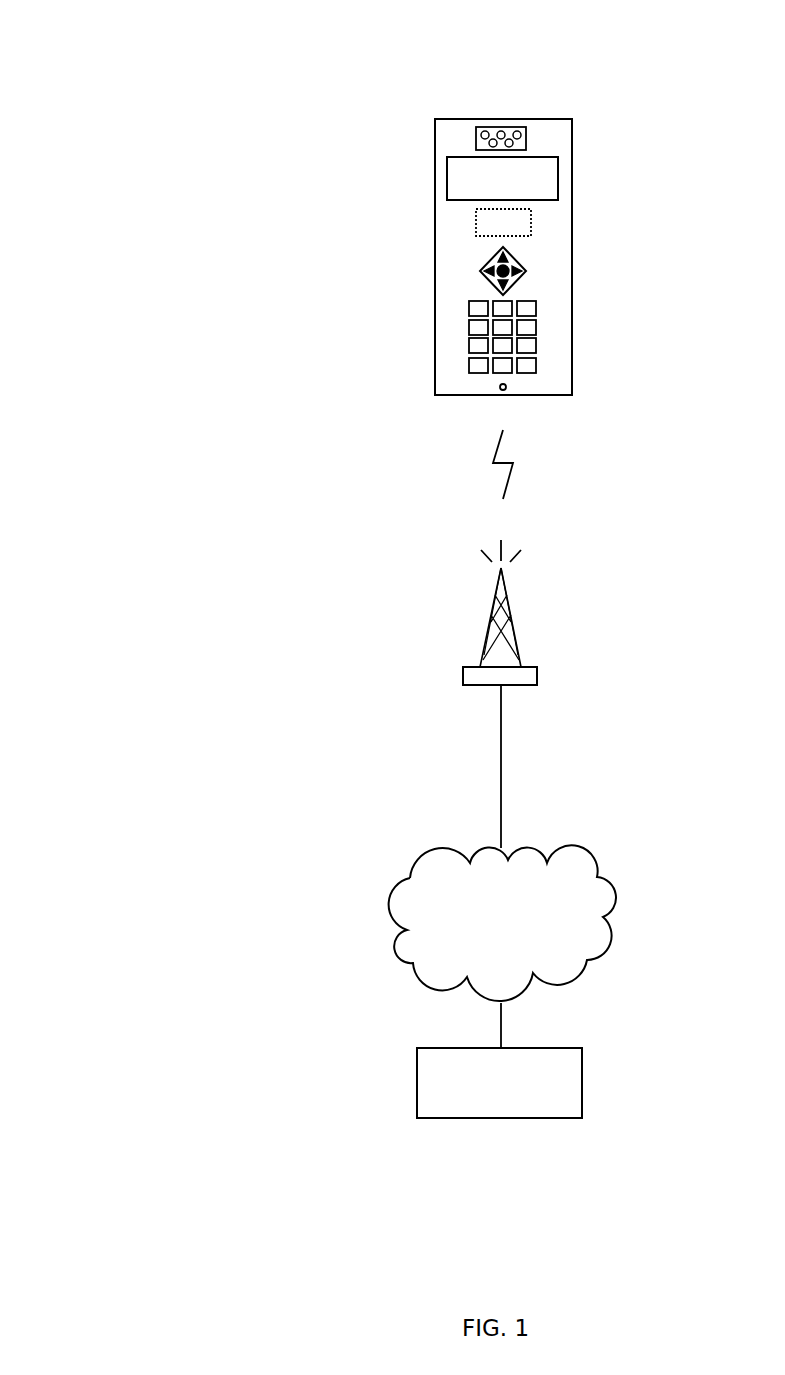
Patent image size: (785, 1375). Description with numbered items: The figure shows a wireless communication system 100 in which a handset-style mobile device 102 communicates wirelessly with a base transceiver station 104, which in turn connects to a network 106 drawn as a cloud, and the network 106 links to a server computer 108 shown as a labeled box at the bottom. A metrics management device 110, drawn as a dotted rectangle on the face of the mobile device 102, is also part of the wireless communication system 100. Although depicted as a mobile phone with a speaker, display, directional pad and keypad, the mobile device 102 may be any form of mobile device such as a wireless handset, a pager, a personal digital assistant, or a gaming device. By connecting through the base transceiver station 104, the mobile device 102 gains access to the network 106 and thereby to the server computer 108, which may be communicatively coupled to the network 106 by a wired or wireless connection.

The wireless communication system 100 is at (74, 76).
The mobile device 102 is at (572, 251).
The base transceiver station 104 is at (537, 676).
The network 106 is at (598, 856).
The server computer 108 is at (507, 1118).
The metrics management device 110 is at (476, 223).